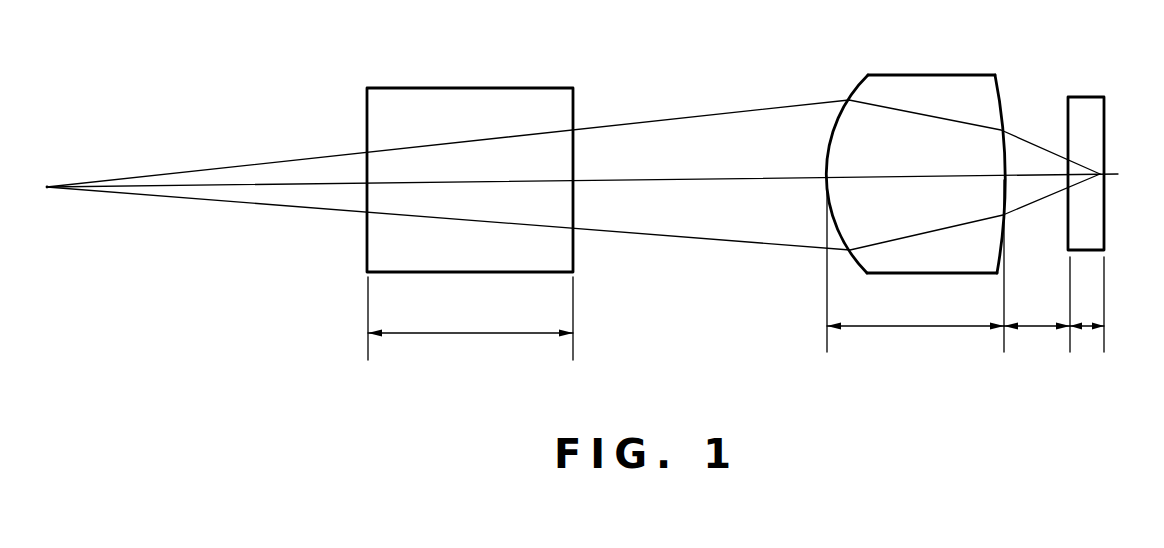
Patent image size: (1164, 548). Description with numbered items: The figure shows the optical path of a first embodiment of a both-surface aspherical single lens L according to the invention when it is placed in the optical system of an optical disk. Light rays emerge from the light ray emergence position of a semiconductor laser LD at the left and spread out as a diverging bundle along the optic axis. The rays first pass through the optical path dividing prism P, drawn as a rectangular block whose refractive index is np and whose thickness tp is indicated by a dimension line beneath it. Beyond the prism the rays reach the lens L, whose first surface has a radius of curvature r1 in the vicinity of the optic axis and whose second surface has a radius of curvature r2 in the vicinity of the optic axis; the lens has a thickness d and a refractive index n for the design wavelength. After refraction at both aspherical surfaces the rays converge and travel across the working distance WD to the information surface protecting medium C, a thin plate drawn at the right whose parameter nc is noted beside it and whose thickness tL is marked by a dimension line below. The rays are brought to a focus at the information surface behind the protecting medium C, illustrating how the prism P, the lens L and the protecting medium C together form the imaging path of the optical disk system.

The light ray emergence position of a semiconductor laser LD is at (46, 186).
The optical path dividing prism P is at (452, 88).
The refractive index of the optical path dividing prism np is at (485, 117).
The thickness of the optical path dividing prism tp is at (470, 322).
The both-surface aspherical single lens L is at (890, 75).
The refractive index of the lens n is at (910, 153).
The radius of curvature of the first surface of the lens r1 is at (828, 148).
The radius of curvature of the second surface of the lens r2 is at (1004, 150).
The thickness of the lens d is at (915, 270).
The working distance WD is at (1037, 308).
The information surface protecting medium C is at (1085, 97).
The refractive index of the information surface protecting medium nc is at (1088, 125).
The thickness of the information surface protecting medium tL is at (1087, 310).